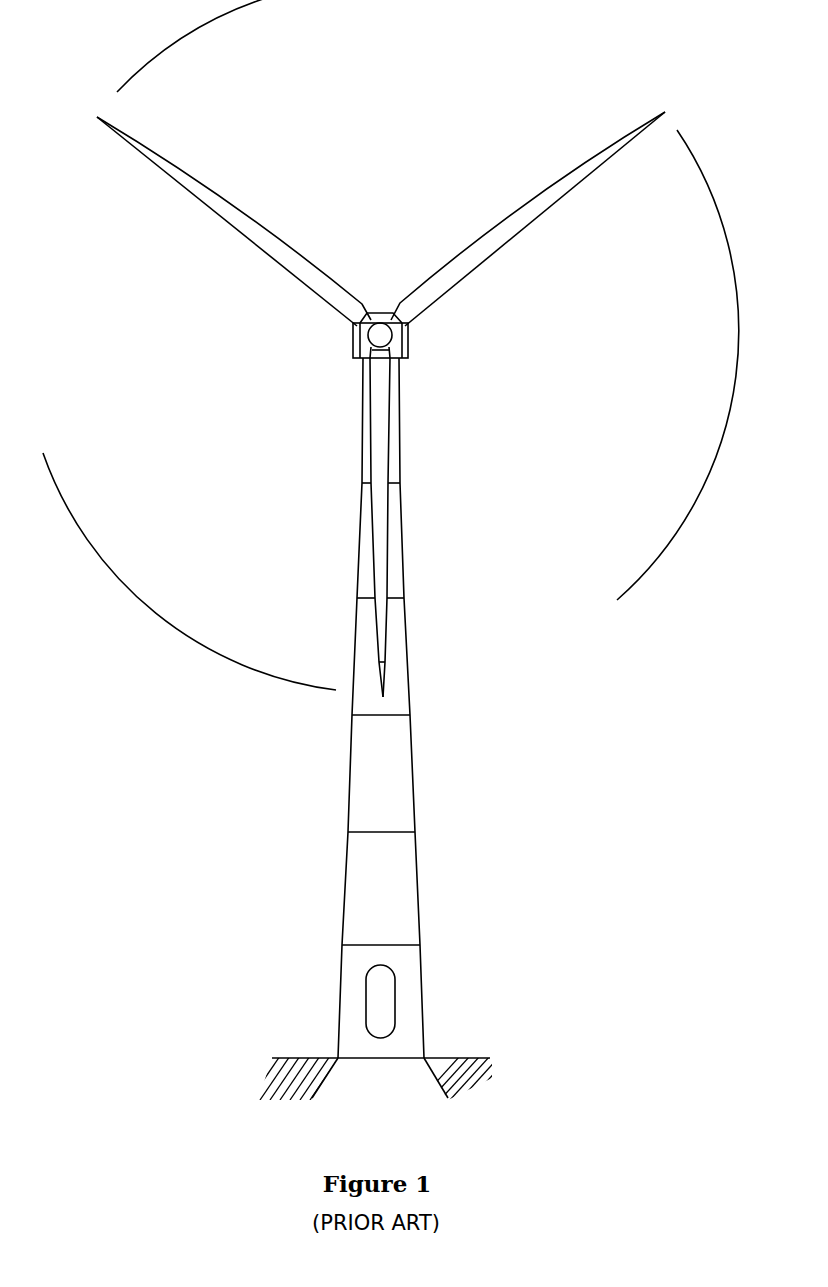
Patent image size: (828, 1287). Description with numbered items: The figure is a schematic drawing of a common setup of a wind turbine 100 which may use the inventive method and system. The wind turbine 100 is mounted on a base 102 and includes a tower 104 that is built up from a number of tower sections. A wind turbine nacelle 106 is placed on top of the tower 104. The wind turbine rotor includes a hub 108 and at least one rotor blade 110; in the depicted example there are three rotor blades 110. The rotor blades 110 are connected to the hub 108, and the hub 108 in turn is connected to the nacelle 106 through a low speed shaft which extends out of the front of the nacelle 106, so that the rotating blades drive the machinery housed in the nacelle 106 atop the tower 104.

The wind turbine 100 is at (296, 855).
The base 102 is at (318, 1080).
The tower 104 is at (407, 768).
The wind turbine nacelle 106 is at (408, 340).
The hub 108 is at (362, 343).
The rotor blade 110 is at (383, 568).